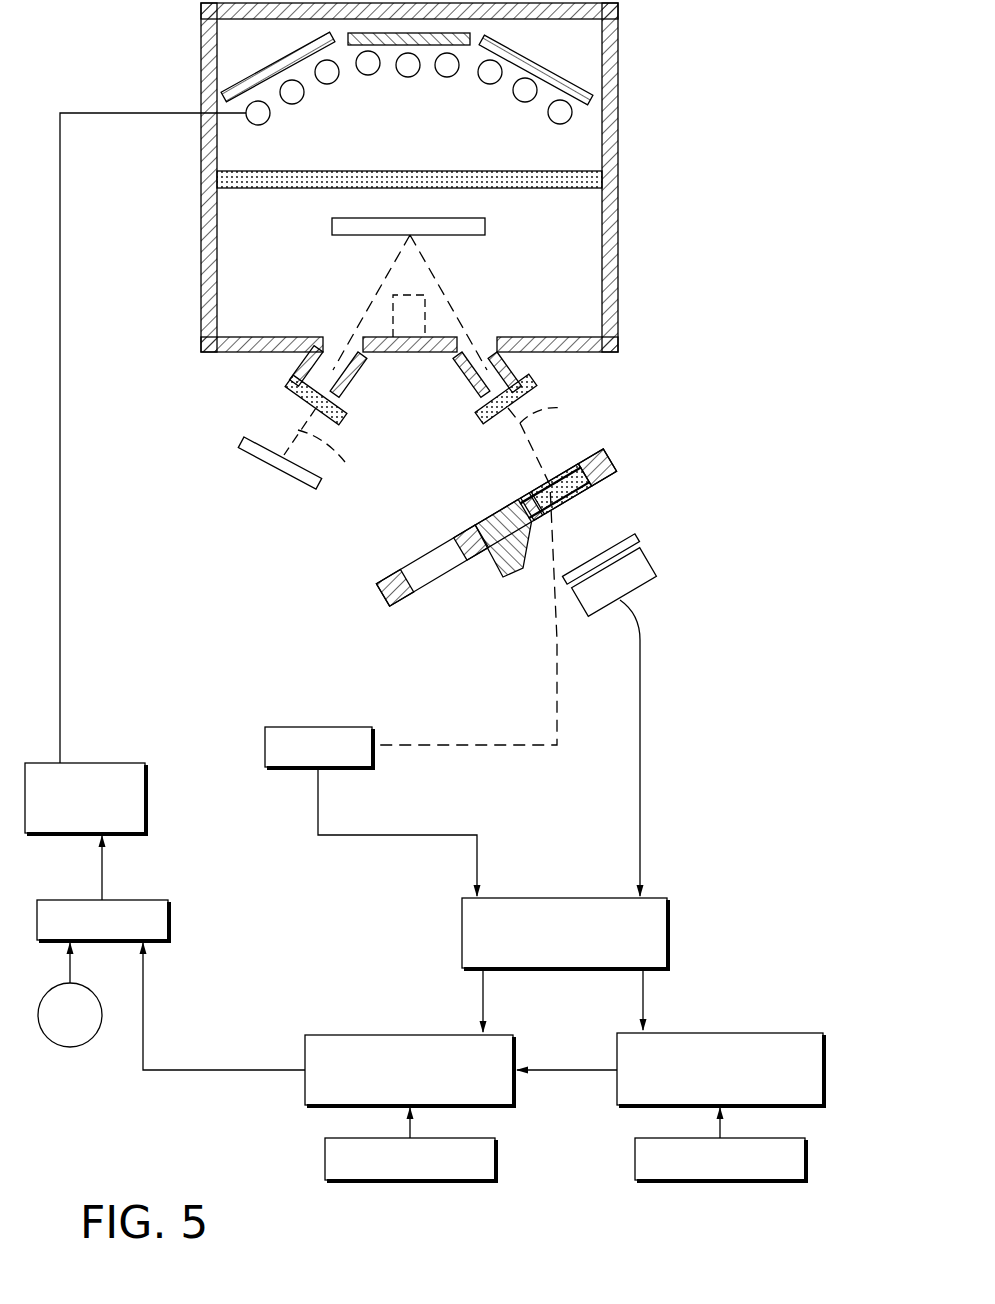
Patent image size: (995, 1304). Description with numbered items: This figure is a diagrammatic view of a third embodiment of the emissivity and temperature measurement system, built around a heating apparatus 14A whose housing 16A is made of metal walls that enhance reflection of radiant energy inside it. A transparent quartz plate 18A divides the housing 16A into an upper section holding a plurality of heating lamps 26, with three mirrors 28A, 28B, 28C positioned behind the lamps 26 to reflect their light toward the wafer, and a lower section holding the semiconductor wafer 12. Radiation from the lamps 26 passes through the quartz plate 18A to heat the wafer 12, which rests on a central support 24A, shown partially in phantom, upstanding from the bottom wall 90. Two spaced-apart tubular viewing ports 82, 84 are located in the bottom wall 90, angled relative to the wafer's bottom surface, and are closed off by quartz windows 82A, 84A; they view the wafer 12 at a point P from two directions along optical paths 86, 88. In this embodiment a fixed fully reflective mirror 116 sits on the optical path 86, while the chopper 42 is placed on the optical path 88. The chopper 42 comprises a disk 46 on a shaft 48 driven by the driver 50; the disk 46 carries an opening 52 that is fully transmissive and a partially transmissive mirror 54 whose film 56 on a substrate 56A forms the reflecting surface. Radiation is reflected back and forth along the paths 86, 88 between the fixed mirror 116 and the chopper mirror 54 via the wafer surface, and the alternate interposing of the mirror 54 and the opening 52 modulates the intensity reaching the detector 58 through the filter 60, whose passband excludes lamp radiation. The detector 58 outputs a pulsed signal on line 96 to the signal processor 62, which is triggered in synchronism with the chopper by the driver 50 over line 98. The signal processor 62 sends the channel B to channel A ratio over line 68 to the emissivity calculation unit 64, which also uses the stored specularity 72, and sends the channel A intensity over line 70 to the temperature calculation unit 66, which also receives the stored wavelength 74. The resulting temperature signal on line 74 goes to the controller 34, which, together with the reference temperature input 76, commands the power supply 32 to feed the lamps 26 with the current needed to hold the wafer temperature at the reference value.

The heating apparatus 14A is at (646, 138).
The housing 16A is at (618, 198).
The bottom wall 90 is at (580, 353).
The mirror 28A is at (300, 50).
The mirror 28B is at (388, 45).
The mirror 28C is at (500, 38).
The heating lamps 26 is at (300, 104).
The quartz plate 18A is at (357, 171).
The semiconductor wafer 12 is at (485, 225).
The point P is at (412, 237).
The central support 24A is at (425, 308).
The viewing port 84 is at (357, 372).
The quartz window 84A is at (342, 415).
The optical path 86 is at (325, 449).
The fixed fully reflective mirror 116 is at (240, 448).
The viewing port 82 is at (457, 372).
The quartz window 82A is at (460, 430).
The optical path 88 is at (479, 568).
The chopper 42 is at (619, 462).
The opening 52 is at (425, 582).
The disk 46 is at (458, 528).
The shaft 48 is at (508, 575).
The partially transmissive mirror 54 is at (552, 512).
The substrate 56A is at (585, 496).
The film 56 is at (565, 462).
The filter 60 is at (637, 535).
The detector 58 is at (727, 598).
The line 96 is at (640, 806).
The driver 50 is at (373, 733).
The line 98 is at (477, 853).
The power supply 32 is at (146, 803).
The controller 34 is at (169, 912).
The reference temperature input 76 is at (65, 1047).
The line 74 is at (142, 1047).
The signal processor 62 is at (668, 930).
The line 70 is at (483, 1000).
The line 68 is at (641, 997).
The temperature calculation unit 66 is at (395, 1034).
The emissivity calculation unit 64 is at (735, 1033).
The specularity storage 72 is at (680, 1181).